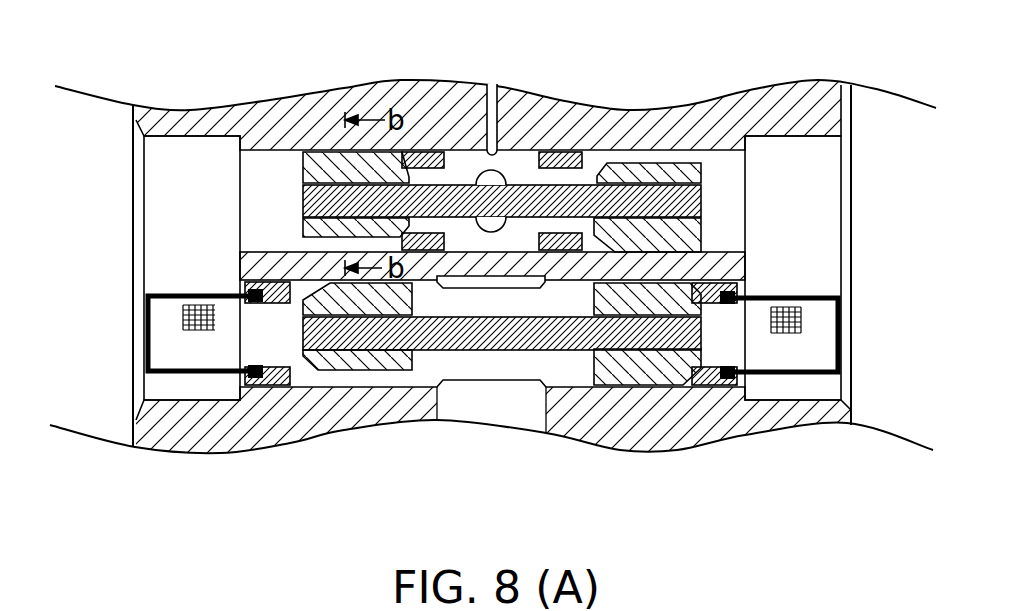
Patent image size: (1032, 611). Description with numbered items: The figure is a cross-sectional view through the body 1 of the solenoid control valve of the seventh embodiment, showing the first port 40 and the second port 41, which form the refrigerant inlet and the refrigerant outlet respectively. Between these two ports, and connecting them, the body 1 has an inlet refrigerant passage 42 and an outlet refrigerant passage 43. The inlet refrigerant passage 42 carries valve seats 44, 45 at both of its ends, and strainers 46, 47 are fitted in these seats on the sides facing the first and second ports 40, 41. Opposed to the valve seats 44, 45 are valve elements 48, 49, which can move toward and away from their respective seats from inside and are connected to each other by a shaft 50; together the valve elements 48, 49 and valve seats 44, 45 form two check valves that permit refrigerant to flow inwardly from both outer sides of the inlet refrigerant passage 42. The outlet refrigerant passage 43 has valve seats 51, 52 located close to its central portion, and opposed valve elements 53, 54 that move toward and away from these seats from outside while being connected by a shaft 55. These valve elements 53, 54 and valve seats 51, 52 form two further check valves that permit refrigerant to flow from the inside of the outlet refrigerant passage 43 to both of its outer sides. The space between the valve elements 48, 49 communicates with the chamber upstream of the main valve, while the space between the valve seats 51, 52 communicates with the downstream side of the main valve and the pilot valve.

The body 1 is at (855, 110).
The first port 40 is at (152, 201).
The second port 41 is at (827, 193).
The inlet refrigerant passage 42 is at (566, 378).
The outlet refrigerant passage 43 is at (721, 160).
The valve seat 44 is at (266, 386).
The valve seat 45 is at (712, 386).
The strainer 46 is at (182, 373).
The strainer 47 is at (798, 375).
The valve element 48 is at (376, 375).
The valve element 49 is at (627, 378).
The shaft 50 is at (483, 351).
The valve seat 51 is at (424, 158).
The valve seat 52 is at (562, 158).
The valve element 53 is at (320, 152).
The valve element 54 is at (632, 166).
The shaft 55 is at (524, 184).